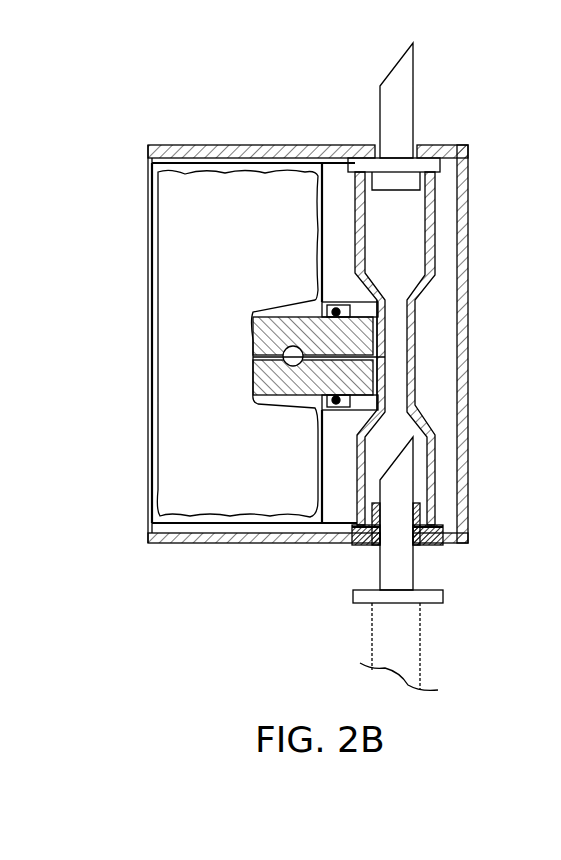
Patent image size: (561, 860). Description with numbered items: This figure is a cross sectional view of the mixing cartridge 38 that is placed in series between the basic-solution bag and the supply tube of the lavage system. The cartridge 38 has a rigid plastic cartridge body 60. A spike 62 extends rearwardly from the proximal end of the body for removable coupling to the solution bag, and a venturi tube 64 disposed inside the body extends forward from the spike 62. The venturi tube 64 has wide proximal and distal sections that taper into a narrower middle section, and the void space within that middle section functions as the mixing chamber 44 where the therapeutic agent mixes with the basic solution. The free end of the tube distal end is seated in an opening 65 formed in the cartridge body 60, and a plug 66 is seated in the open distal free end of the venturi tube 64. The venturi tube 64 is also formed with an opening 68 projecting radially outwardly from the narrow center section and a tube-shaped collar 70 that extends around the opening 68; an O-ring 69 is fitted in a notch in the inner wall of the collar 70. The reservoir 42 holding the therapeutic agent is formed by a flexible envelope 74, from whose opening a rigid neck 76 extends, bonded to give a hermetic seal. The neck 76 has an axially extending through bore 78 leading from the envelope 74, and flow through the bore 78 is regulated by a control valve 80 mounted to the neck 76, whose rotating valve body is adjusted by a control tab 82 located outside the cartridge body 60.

The mixing cartridge 38 is at (503, 170).
The reservoir 42 is at (175, 275).
The mixing chamber 44 is at (397, 350).
The cartridge body 60 is at (205, 548).
The spike 62 is at (376, 115).
The venturi tube 64 is at (402, 242).
The opening 65 is at (372, 548).
The plug 66 is at (425, 528).
The opening 68 is at (380, 357).
The O-ring 69 is at (325, 410).
The collar 70 is at (333, 302).
The envelope 74 is at (206, 230).
The neck 76 is at (250, 335).
The through bore 78 is at (250, 356).
The control valve 80 is at (283, 362).
The control tab 82 is at (415, 558).